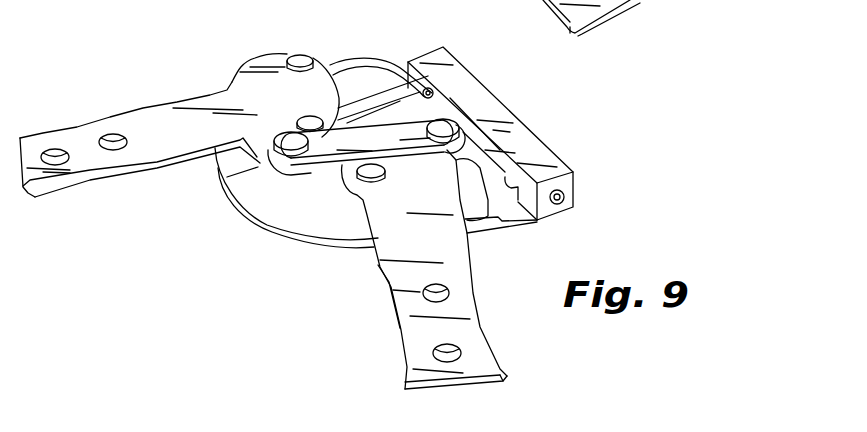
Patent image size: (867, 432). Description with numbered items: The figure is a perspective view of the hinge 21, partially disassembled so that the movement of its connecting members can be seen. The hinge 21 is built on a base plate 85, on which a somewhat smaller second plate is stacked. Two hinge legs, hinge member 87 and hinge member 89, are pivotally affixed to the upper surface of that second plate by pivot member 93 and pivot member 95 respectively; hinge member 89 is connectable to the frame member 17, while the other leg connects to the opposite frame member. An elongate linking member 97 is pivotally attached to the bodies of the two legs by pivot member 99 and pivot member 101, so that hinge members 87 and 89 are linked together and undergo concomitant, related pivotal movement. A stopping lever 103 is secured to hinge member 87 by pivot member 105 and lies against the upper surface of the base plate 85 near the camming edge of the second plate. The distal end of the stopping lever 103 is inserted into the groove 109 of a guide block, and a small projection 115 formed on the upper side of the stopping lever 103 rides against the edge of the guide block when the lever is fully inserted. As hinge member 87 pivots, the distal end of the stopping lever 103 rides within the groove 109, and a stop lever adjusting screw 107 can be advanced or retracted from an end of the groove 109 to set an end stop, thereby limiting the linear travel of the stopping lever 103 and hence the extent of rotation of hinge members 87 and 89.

The frame member 17 is at (12, 11).
The hinge 21 is at (239, 63).
The base plate 85 is at (297, 232).
The hinge member 87 is at (147, 115).
The hinge member 89 is at (418, 340).
The pivot member 93 is at (302, 116).
The pivot member 95 is at (352, 181).
The linking member 97 is at (393, 152).
The pivot member 99 is at (260, 165).
The pivot member 101 is at (497, 104).
The stopping lever 103 is at (361, 84).
The pivot member 105 is at (300, 55).
The stop lever adjusting screw 107 is at (567, 207).
The groove 109 is at (510, 186).
The small projection 115 is at (455, 63).